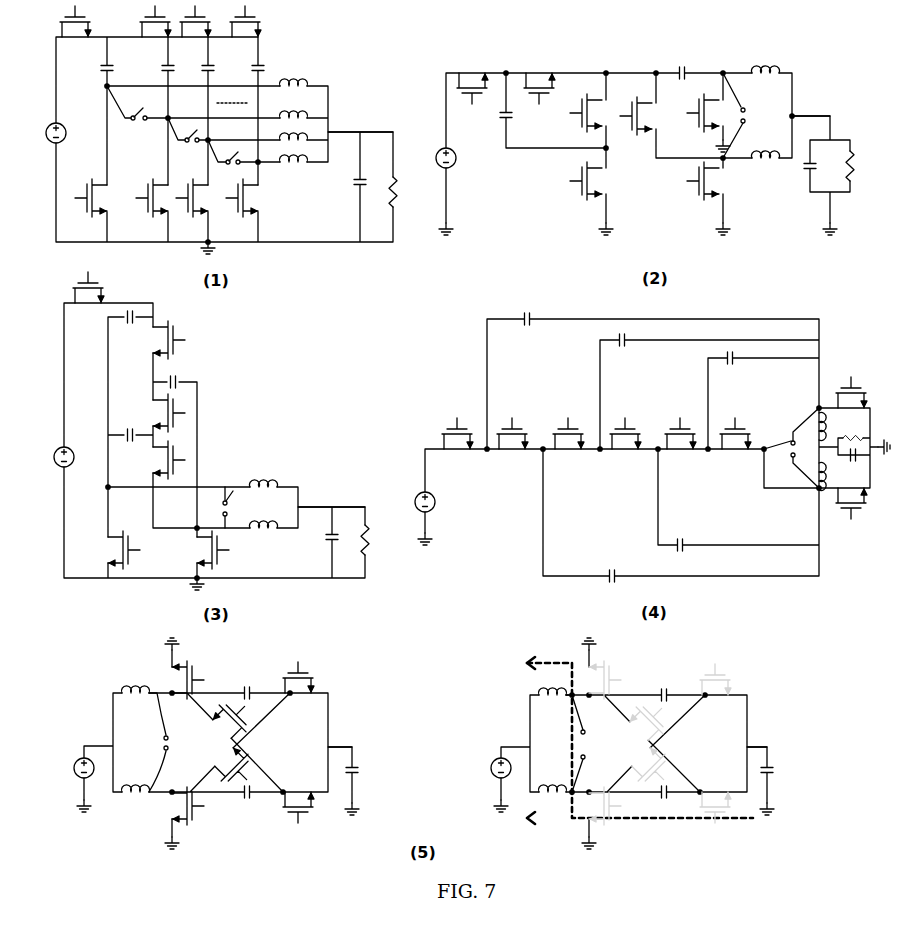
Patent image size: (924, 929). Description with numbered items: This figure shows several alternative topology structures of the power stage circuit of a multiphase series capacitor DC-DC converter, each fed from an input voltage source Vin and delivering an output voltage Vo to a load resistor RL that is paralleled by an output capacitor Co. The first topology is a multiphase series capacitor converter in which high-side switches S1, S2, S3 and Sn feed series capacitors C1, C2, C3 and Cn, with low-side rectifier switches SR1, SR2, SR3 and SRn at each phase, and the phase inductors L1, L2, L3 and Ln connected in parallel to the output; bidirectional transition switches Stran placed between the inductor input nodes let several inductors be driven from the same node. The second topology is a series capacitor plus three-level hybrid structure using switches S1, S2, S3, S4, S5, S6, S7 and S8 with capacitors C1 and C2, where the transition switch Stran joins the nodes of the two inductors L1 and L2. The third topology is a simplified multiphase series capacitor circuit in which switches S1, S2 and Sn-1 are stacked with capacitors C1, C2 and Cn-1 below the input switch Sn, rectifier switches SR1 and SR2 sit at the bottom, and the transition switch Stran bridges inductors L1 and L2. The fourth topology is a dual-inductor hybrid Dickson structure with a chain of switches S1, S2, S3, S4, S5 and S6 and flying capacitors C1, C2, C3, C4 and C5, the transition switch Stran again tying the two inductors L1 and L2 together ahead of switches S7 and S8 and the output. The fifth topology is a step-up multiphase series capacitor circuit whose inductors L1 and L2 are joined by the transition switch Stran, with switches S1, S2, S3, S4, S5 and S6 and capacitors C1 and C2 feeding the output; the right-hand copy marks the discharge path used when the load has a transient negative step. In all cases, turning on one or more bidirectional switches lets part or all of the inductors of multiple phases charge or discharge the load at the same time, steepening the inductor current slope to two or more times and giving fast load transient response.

The input voltage source Vin is at (278, 450).
The output voltage Vo is at (564, 424).
The switch S1 is at (387, 350).
The switch S2 is at (387, 413).
The switch S3 is at (408, 397).
The switch S4 is at (441, 453).
The switch S5 is at (507, 464).
The switch S6 is at (517, 624).
The switch S7 is at (776, 344).
The switch S8 is at (743, 252).
The switch Sn is at (87, 152).
The switch Sn-1 is at (171, 340).
The synchronous rectifier switch SR1 is at (227, 374).
The synchronous rectifier switch SR2 is at (158, 374).
The synchronous rectifier switch SR3 is at (151, 203).
The synchronous rectifier switch SRn is at (89, 203).
The bidirectional transition switch Stran is at (484, 432).
The series capacitor C1 is at (395, 382).
The series capacitor C2 is at (429, 442).
The series capacitor C3 is at (393, 211).
The series capacitor C4 is at (689, 541).
The series capacitor C5 is at (738, 363).
The series capacitor Cn is at (99, 70).
The series capacitor Cn-1 is at (128, 328).
The output capacitor Co is at (588, 471).
The first inductor L1 is at (474, 371).
The second inductor L2 is at (474, 462).
The third inductor L3 is at (285, 123).
The nth inductor Ln is at (285, 91).
The load resistor RL is at (609, 355).